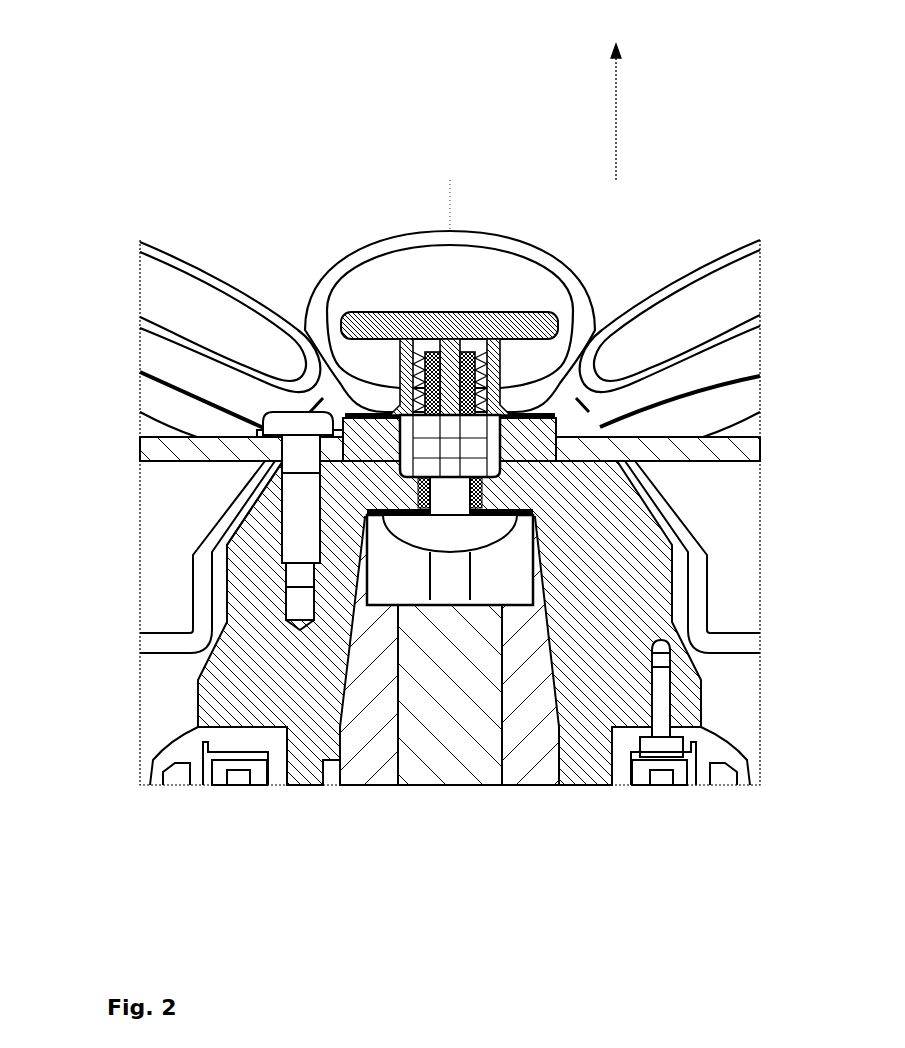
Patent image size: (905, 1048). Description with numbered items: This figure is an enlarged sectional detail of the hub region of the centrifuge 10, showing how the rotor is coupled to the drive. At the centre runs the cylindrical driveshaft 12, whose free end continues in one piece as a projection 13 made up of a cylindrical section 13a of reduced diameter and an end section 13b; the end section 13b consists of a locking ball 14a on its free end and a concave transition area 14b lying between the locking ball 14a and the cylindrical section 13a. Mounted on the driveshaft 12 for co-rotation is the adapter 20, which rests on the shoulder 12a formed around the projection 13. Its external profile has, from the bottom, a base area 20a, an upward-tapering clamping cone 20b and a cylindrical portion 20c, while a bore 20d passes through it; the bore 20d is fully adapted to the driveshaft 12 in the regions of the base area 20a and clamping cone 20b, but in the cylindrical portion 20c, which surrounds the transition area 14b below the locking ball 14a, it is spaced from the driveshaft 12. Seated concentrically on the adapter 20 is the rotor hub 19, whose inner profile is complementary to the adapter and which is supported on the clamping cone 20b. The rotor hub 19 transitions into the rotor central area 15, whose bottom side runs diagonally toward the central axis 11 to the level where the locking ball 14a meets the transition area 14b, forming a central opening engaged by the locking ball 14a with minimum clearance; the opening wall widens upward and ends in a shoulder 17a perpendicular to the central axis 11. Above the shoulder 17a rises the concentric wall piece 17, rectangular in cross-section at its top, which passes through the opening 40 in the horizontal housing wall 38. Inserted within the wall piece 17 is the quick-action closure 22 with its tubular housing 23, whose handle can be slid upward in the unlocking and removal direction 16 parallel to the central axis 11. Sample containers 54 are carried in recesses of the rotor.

The centrifuge 10 is at (833, 78).
The central axis 11 is at (445, 775).
The driveshaft 12 is at (425, 760).
The shoulder 12a is at (707, 597).
The projection 13 is at (707, 557).
The cylindrical section 13a is at (283, 570).
The end section 13b is at (244, 512).
The locking ball 14a is at (244, 490).
The transition area 14b is at (236, 535).
The rotor central area 15 is at (300, 352).
The unlocking and removal direction 16 is at (634, 106).
The wall piece 17 is at (650, 373).
The shoulder 17a is at (705, 425).
The rotor hub 19 is at (240, 785).
The adapter 20 is at (310, 727).
The base area 20a is at (705, 748).
The clamping cone 20b is at (703, 697).
The cylindrical portion 20c is at (706, 630).
The bore 20d is at (478, 760).
The quick-action closure 22 is at (598, 352).
The housing 23 is at (245, 412).
The housing wall 38 is at (760, 450).
The opening 40 is at (400, 405).
The sample containers 54 is at (337, 262).